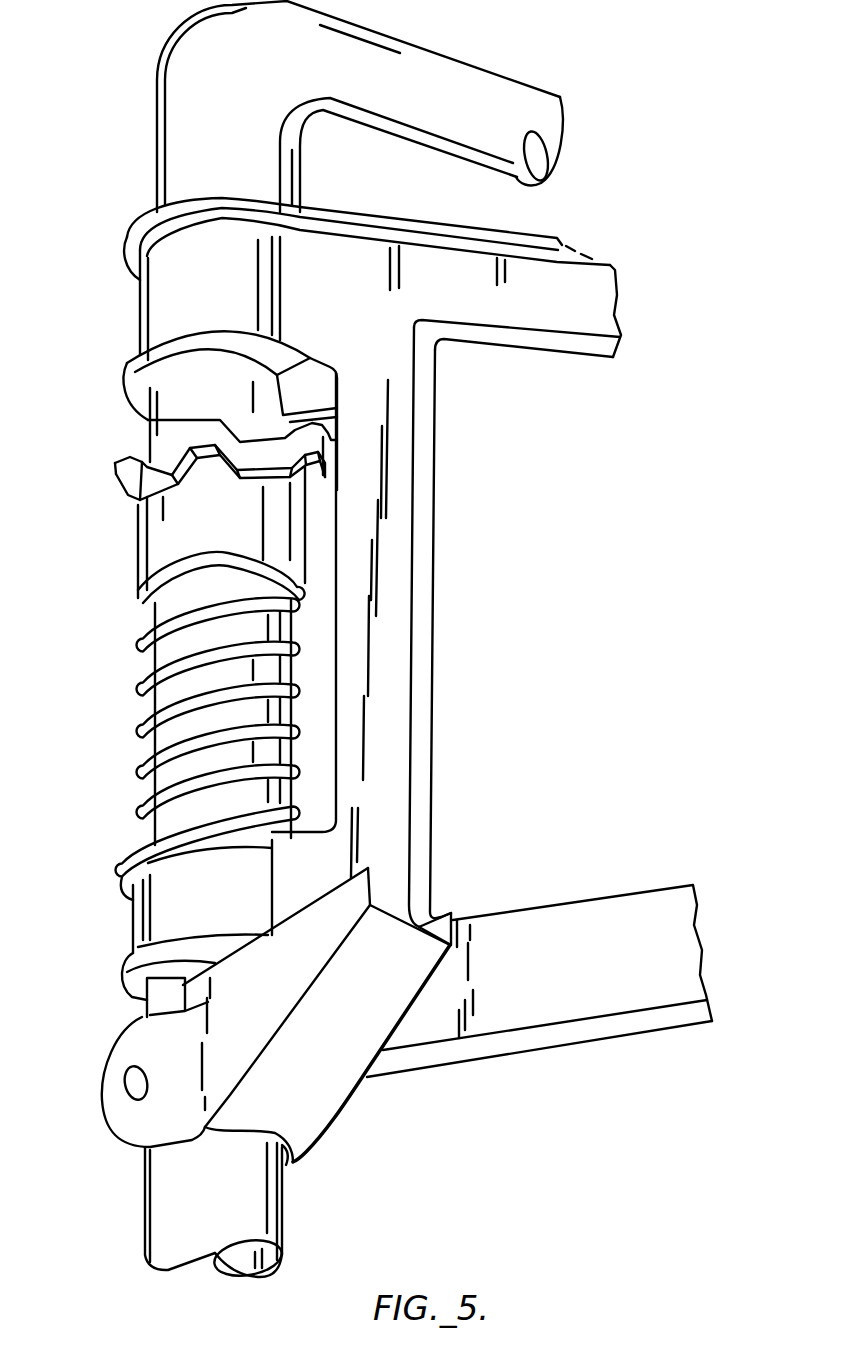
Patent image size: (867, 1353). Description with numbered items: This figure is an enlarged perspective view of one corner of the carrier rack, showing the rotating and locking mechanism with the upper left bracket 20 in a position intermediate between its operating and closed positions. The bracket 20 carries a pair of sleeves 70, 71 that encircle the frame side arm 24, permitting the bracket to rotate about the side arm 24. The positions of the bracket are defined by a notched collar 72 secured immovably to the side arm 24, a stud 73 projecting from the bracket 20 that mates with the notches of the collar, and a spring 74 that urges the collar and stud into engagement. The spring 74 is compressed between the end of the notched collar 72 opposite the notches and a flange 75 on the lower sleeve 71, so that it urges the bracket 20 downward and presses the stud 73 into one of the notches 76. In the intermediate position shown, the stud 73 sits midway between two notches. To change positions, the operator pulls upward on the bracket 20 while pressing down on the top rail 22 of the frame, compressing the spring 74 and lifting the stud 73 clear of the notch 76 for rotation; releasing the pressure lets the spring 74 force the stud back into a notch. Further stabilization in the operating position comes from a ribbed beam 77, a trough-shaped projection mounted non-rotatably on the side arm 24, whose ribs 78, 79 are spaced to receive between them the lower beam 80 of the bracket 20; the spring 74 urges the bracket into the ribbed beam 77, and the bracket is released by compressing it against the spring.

The bracket 20 is at (595, 318).
The top rail 22 is at (493, 64).
The frame side arm 24 is at (146, 1210).
The sleeve 70 is at (138, 317).
The lower sleeve 71 is at (133, 920).
The notched collar 72 is at (137, 548).
The stud 73 is at (300, 397).
The spring 74 is at (143, 689).
The flange 75 is at (123, 858).
The notch 76 is at (262, 428).
The ribbed beam 77 is at (147, 998).
The rib 78 is at (443, 910).
The rib 79 is at (340, 882).
The lower beam 80 is at (603, 1028).